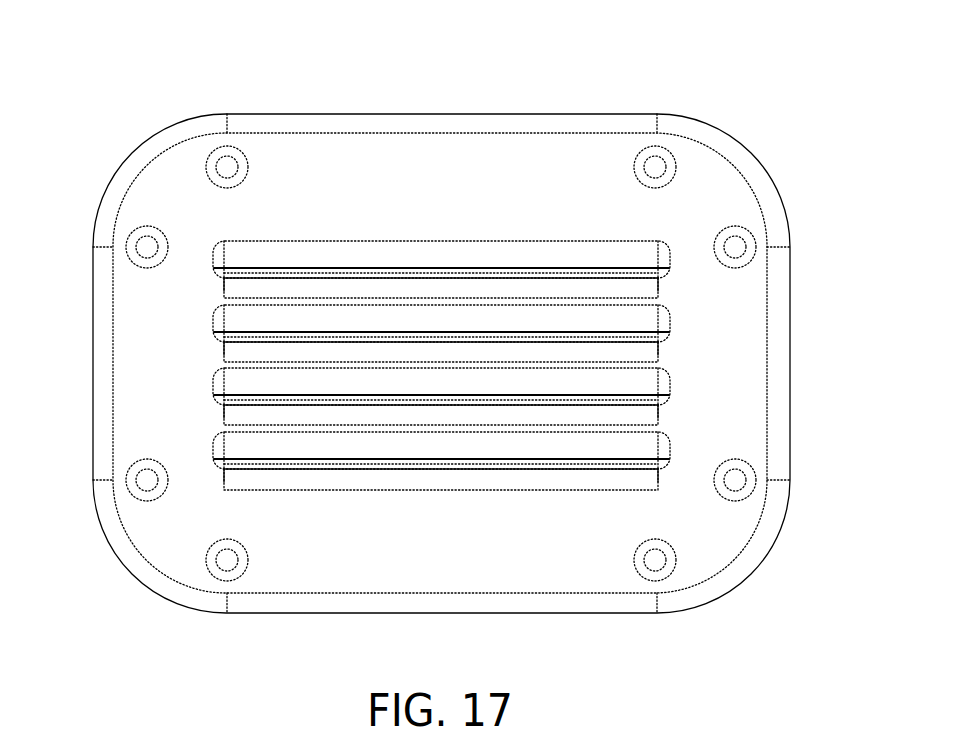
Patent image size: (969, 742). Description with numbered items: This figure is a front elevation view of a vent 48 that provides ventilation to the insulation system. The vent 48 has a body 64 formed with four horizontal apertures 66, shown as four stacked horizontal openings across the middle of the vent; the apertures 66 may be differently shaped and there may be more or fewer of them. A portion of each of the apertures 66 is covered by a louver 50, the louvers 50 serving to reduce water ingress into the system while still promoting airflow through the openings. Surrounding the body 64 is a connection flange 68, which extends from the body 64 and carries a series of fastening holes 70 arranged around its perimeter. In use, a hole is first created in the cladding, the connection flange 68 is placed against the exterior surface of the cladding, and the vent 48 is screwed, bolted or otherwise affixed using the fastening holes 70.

The vent 48 is at (136, 70).
The louver 50 is at (633, 258).
The body 64 is at (407, 228).
The horizontal aperture 66 is at (238, 285).
The connection flange 68 is at (557, 562).
The fastening hole 70 is at (224, 565).